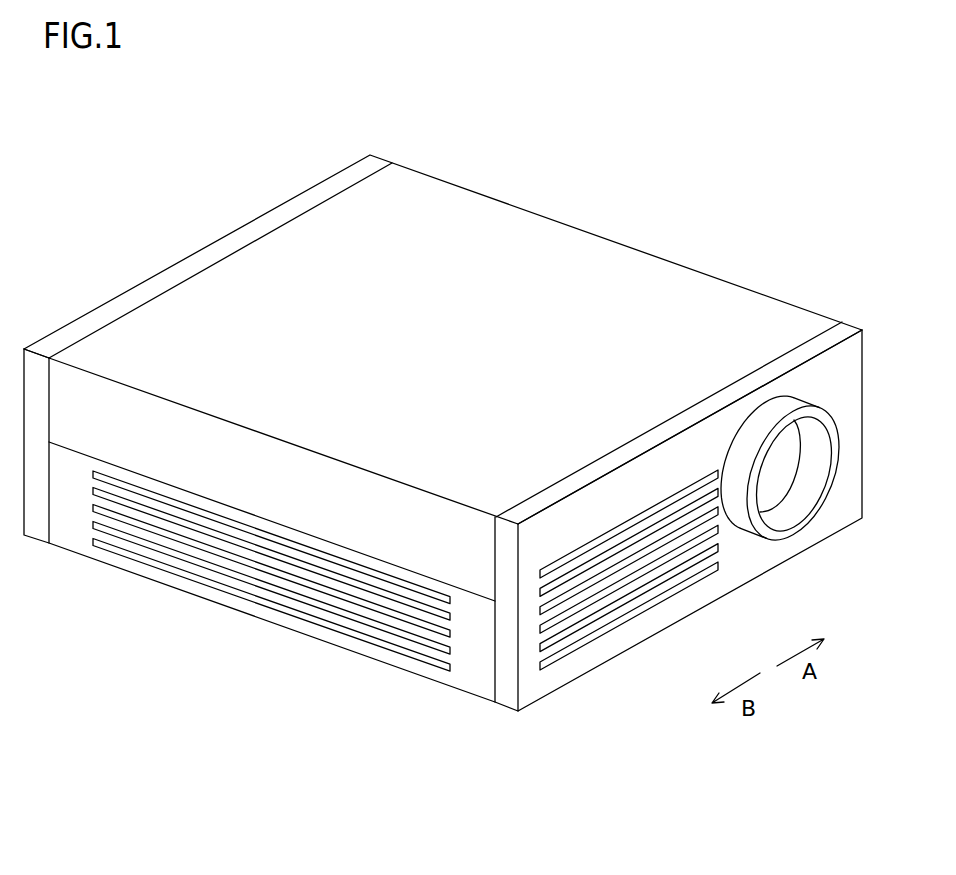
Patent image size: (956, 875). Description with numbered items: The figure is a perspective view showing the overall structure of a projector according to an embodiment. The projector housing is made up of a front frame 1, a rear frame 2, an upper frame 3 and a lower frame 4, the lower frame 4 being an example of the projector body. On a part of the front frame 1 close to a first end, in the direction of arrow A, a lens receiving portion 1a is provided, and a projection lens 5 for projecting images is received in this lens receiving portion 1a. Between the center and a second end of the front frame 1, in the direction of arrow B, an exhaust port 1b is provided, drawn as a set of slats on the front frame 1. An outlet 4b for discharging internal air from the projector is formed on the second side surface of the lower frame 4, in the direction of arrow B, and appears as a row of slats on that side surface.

The front frame 1 is at (733, 560).
The lens receiving portion 1a is at (763, 418).
The exhaust port 1b is at (640, 612).
The rear frame 2 is at (245, 233).
The upper frame 3 is at (593, 273).
The lower frame 4 is at (468, 668).
The outlet 4b is at (290, 615).
The projection lens 5 is at (773, 470).